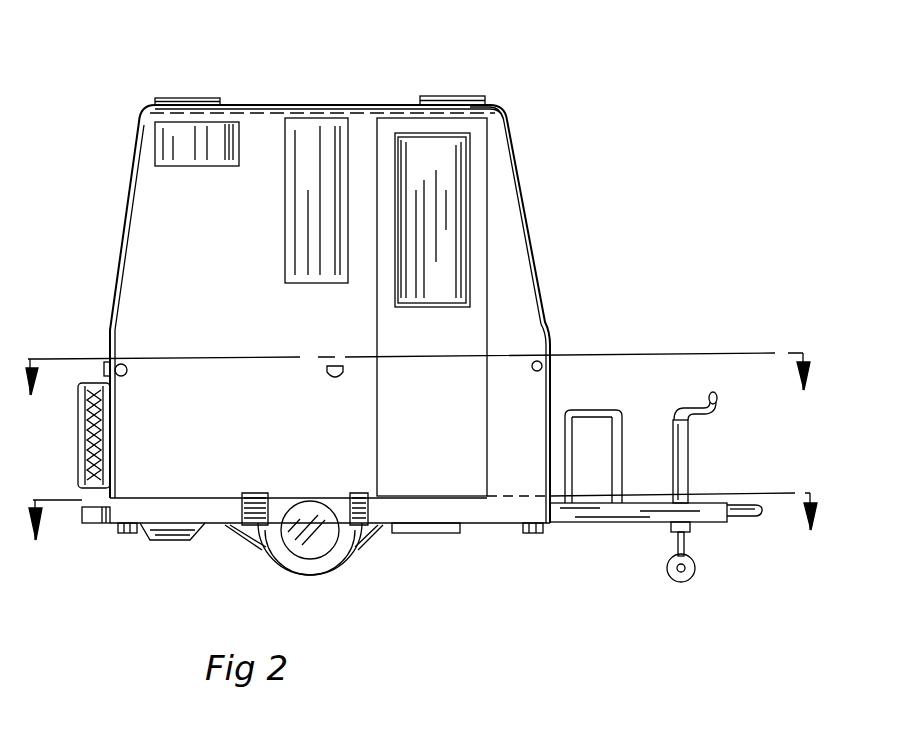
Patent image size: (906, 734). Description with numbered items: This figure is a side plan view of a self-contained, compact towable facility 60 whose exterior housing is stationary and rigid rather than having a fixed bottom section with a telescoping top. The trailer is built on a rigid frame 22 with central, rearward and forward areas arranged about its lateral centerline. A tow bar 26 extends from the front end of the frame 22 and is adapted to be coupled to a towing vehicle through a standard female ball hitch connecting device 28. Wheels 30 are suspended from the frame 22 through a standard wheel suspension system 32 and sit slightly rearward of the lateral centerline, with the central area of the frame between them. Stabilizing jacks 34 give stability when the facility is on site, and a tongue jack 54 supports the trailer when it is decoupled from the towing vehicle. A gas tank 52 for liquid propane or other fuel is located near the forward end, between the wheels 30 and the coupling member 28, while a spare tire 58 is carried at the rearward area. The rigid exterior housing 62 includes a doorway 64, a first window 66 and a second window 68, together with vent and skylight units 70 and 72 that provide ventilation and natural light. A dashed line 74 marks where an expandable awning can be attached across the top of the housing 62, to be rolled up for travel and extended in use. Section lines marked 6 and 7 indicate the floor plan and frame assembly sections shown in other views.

The section line 6- 6 is at (414, 386).
The section line 7- 7 is at (420, 528).
The rigid frame 22 is at (487, 526).
The tow bar 26 is at (618, 523).
The female ball hitch connecting device 28 is at (752, 517).
The wheels 30 is at (355, 560).
The wheel suspension system 32 is at (247, 536).
The stabilizing jacks 34 is at (129, 535).
The gas tank 52 is at (617, 410).
The tongue jack 54 is at (688, 443).
The spare tire 58 is at (78, 453).
The towable facility 60 is at (598, 246).
The rigid exterior housing 62 is at (551, 336).
The doorway 64 is at (472, 320).
The first window 66 is at (333, 130).
The second window 68 is at (163, 145).
The vent and skylight unit 70 is at (443, 96).
The vent and skylight unit 72 is at (215, 100).
The dashed line 74 is at (488, 113).